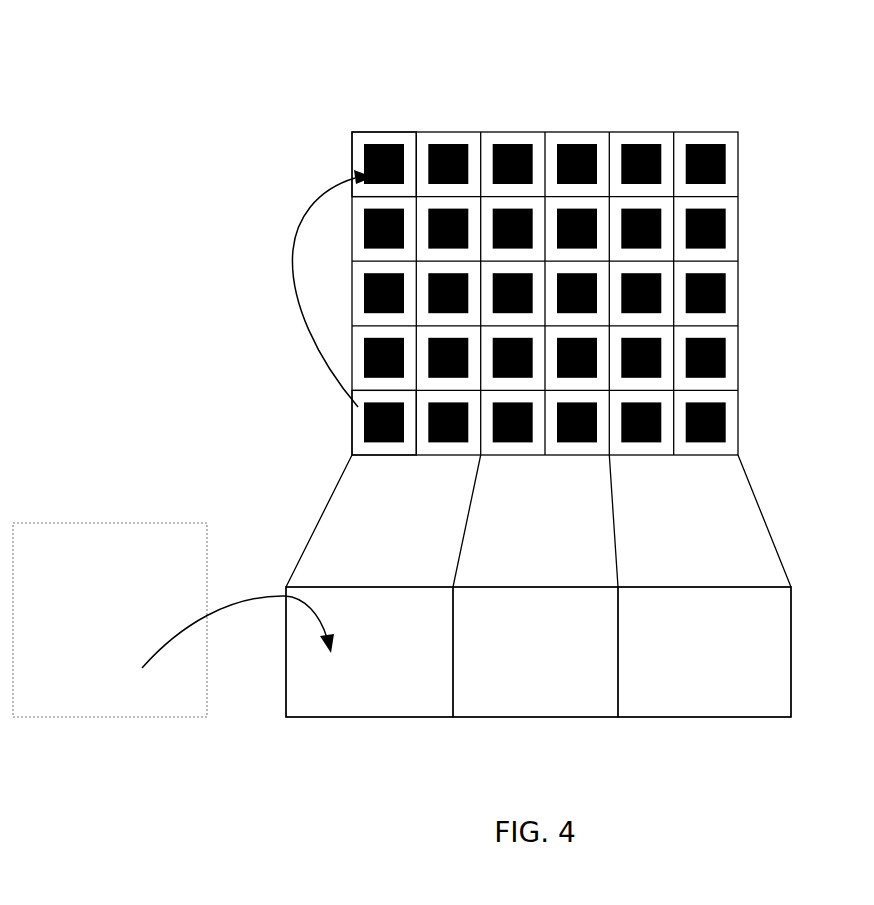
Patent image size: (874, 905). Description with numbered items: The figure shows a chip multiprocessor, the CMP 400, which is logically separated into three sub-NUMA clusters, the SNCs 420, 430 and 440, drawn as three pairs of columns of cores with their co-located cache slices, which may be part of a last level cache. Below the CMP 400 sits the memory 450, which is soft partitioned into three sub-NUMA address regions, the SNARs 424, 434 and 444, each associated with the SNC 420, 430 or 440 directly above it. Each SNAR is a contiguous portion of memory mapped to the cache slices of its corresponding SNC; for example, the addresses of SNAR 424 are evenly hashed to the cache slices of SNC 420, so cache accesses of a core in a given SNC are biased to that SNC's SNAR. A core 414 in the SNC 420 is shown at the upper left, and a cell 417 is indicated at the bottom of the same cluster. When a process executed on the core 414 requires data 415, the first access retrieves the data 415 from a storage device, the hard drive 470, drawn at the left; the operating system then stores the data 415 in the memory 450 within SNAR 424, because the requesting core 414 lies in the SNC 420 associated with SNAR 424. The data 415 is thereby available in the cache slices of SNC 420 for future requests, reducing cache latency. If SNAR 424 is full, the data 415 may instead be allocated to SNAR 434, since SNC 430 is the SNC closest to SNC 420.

The CMP 400 is at (576, 277).
The core 414 is at (383, 165).
The data 415 is at (257, 419).
The storage cell 417 is at (408, 447).
The sub-NUMA cluster 420 is at (352, 120).
The sub-NUMA cluster 430 is at (609, 120).
The sub-NUMA cluster 440 is at (738, 120).
The sub-NUMA address region 424 is at (369, 652).
The sub-NUMA address region 434 is at (535, 652).
The sub-NUMA address region 444 is at (704, 652).
The memory 450 is at (538, 679).
The hard drive 470 is at (110, 620).